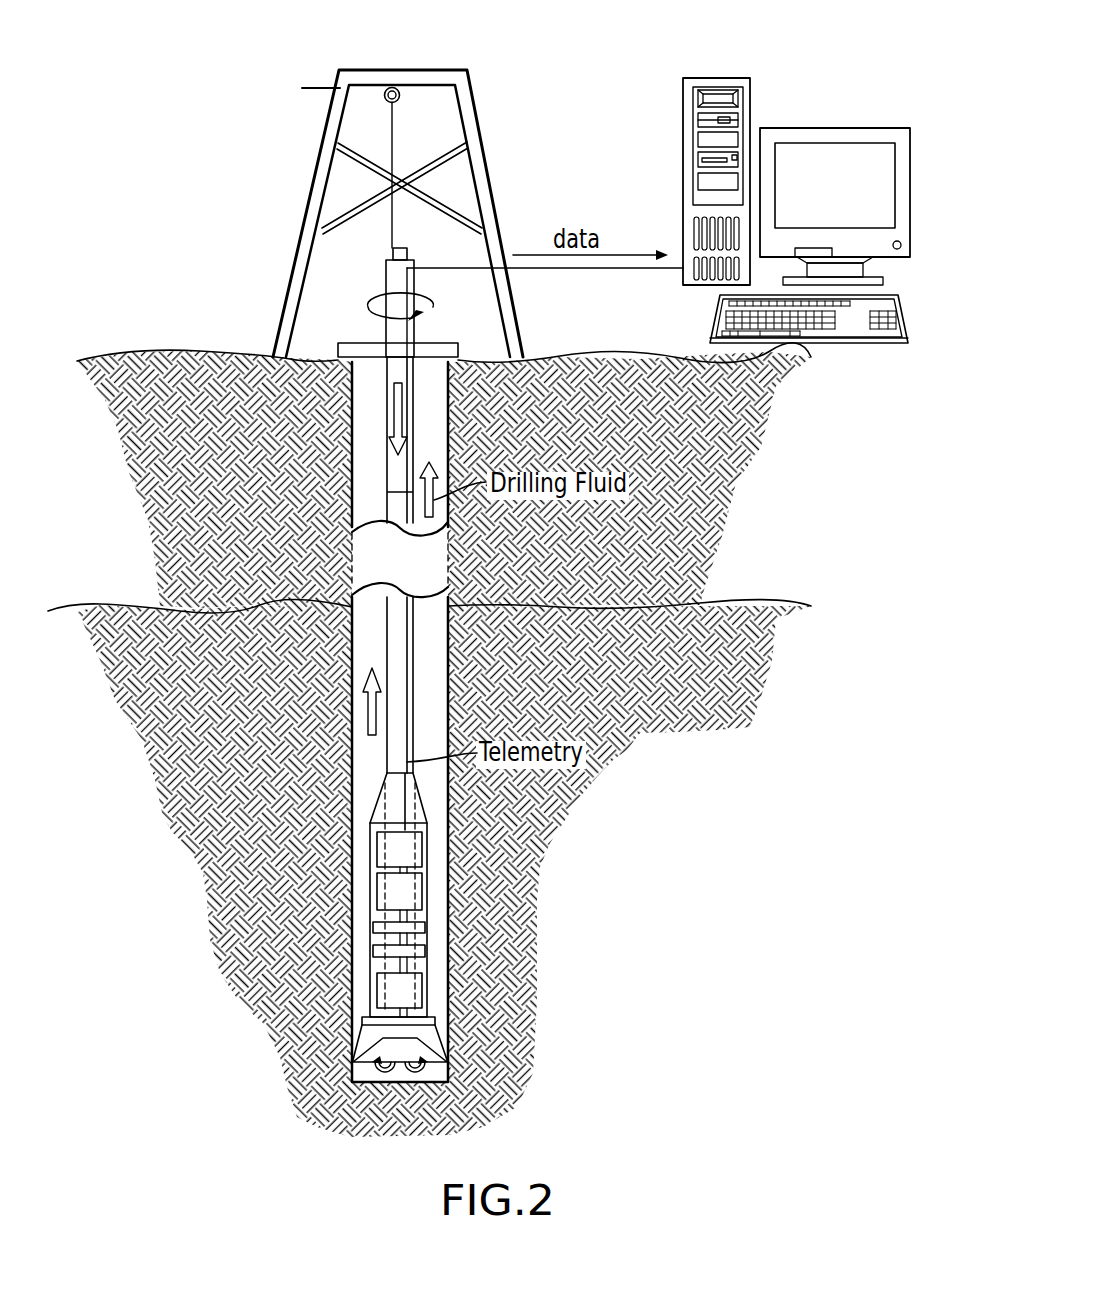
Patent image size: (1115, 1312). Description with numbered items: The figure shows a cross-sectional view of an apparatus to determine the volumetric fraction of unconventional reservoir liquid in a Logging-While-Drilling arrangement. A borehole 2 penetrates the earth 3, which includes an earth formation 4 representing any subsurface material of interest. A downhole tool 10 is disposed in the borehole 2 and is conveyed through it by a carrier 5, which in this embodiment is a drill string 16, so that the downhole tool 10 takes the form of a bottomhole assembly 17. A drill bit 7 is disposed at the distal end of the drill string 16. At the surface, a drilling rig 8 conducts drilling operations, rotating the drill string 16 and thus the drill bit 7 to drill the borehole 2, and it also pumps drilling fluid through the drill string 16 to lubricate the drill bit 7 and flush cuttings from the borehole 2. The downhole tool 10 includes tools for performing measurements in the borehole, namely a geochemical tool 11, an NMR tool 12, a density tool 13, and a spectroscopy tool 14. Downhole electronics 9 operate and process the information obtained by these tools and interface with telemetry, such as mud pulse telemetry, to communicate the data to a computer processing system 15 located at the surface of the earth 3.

The borehole 2 is at (358, 510).
The earth 3 is at (718, 433).
The earth formation 4 is at (749, 676).
The carrier 5 is at (387, 612).
The drill bit 7 is at (368, 1038).
The drilling rig 8 is at (250, 302).
The downhole electronics 9 is at (406, 863).
The downhole tool 10 is at (355, 872).
The geochemical tool 11 is at (424, 885).
The NMR tool 12 is at (426, 927).
The density tool 13 is at (426, 950).
The spectroscopy tool 14 is at (424, 992).
The computer processing system 15 is at (727, 78).
The drill string 16 is at (387, 466).
The bottomhole assembly 17 is at (370, 838).